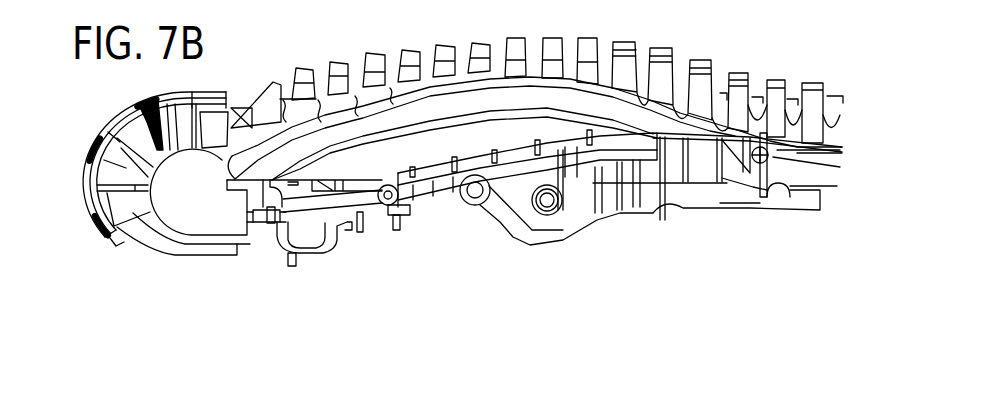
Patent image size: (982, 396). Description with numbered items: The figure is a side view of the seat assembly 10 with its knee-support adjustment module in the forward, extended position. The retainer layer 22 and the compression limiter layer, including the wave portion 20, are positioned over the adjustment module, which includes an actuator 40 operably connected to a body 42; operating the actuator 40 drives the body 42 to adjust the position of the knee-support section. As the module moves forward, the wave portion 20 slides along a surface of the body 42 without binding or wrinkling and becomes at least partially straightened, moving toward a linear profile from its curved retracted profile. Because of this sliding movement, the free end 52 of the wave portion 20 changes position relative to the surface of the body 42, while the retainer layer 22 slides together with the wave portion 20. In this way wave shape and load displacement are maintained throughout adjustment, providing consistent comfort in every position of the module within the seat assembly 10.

The seat assembly 10 is at (283, 52).
The wave portion 20 is at (122, 115).
The retainer layer 22 is at (118, 200).
The actuator 40 is at (358, 200).
The body 42 is at (203, 219).
The free end 52 is at (124, 220).